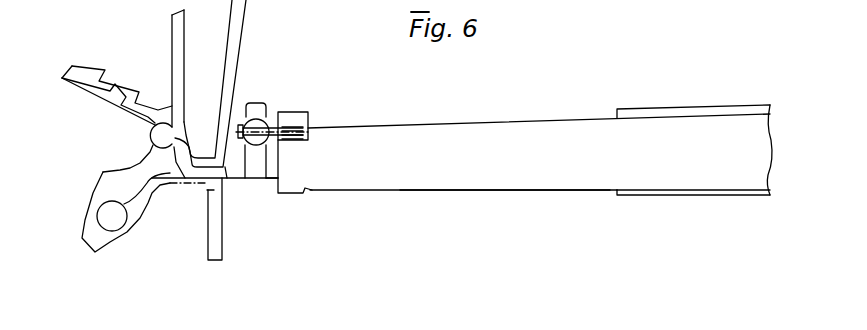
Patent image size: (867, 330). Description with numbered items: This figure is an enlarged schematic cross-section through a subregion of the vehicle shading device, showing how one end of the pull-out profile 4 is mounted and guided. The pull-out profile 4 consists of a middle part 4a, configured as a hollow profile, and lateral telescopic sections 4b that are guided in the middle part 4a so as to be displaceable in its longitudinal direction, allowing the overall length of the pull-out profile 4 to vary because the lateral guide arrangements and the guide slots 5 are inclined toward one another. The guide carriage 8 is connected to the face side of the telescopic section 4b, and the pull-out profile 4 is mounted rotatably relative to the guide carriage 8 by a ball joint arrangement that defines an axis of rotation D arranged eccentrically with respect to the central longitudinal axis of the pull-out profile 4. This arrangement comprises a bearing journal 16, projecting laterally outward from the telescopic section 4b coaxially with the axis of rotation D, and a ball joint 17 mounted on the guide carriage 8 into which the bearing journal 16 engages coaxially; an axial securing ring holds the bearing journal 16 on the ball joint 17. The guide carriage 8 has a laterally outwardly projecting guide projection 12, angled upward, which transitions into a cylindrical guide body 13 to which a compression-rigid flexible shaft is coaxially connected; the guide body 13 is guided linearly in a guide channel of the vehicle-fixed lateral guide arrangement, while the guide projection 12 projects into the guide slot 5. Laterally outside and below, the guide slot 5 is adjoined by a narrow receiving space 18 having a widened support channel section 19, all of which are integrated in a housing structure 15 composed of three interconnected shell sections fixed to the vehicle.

The pull-out profile 4 is at (540, 144).
The middle part 4a is at (713, 194).
The telescopic section 4b is at (527, 185).
The guide slot 5 is at (232, 186).
The guide carriage 8 is at (264, 188).
The guide projection 12 is at (230, 185).
The guide body 13 is at (160, 134).
The housing structure 15 is at (142, 73).
The bearing journal 16 is at (278, 112).
The ball joint 17 is at (243, 117).
The receiving space 18 is at (103, 172).
The support channel section 19 is at (108, 214).
The axis of rotation D is at (312, 130).